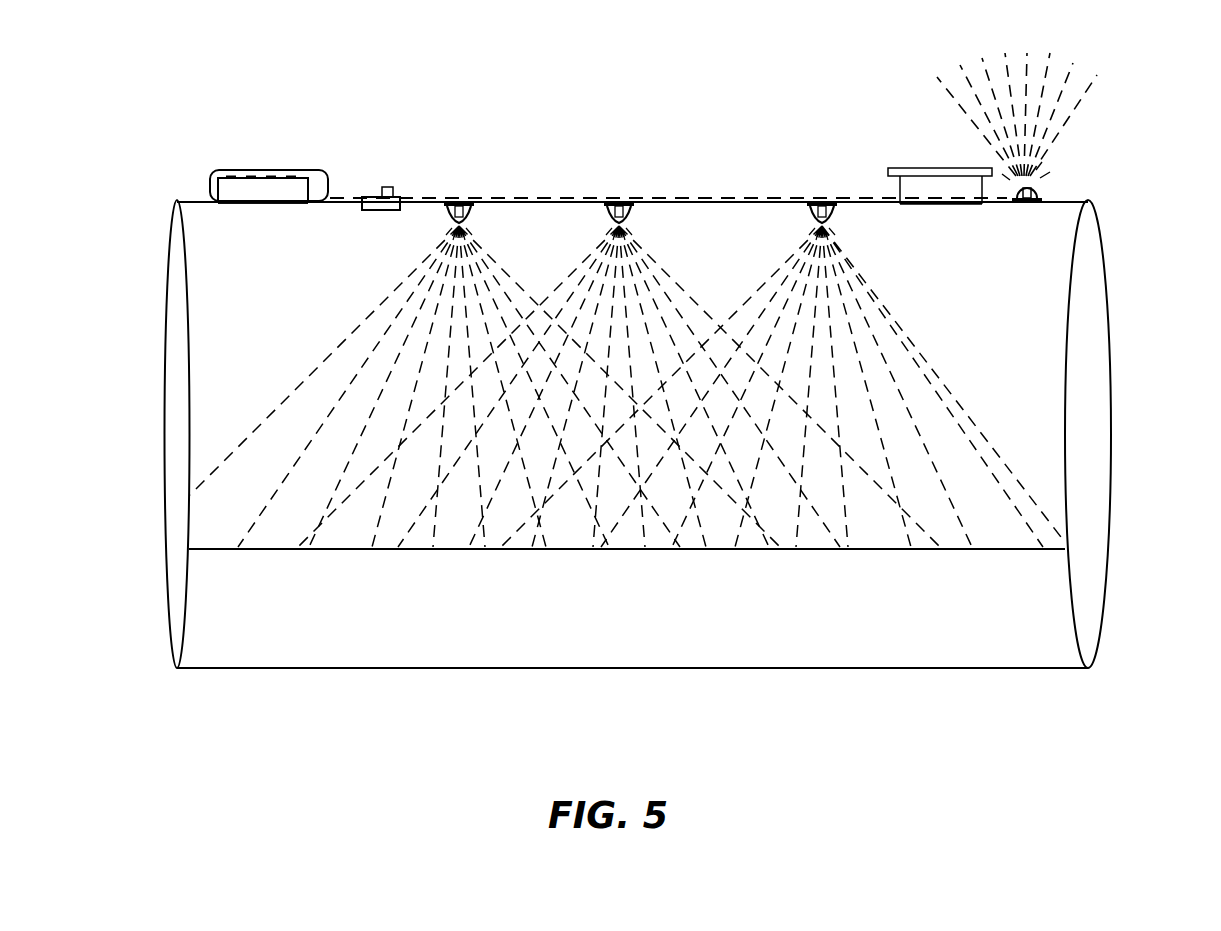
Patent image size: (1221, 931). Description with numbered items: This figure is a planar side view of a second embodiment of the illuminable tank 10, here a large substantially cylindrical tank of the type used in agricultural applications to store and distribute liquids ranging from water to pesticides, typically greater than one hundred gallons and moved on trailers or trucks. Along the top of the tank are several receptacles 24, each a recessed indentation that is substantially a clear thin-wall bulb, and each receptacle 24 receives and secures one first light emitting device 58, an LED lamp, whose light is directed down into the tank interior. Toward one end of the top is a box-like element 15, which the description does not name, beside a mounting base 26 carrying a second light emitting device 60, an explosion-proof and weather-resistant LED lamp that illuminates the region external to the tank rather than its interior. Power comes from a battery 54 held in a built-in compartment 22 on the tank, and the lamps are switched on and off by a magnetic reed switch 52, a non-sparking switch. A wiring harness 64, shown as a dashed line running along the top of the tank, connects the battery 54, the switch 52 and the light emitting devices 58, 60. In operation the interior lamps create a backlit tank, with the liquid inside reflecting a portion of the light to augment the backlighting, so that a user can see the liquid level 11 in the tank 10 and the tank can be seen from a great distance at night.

The illuminable tank 10 is at (633, 125).
The liquid level 11 is at (222, 548).
The pump 15 is at (913, 192).
The built-in compartment 22 is at (213, 169).
The receptacle 24 is at (636, 202).
The mounting base 26 is at (1043, 198).
The magnetic reed switch 52 is at (383, 192).
The battery 54 is at (228, 202).
The first light emitting device 58 is at (613, 200).
The second light emitting device 60 is at (1020, 178).
The wiring harness 64 is at (747, 197).